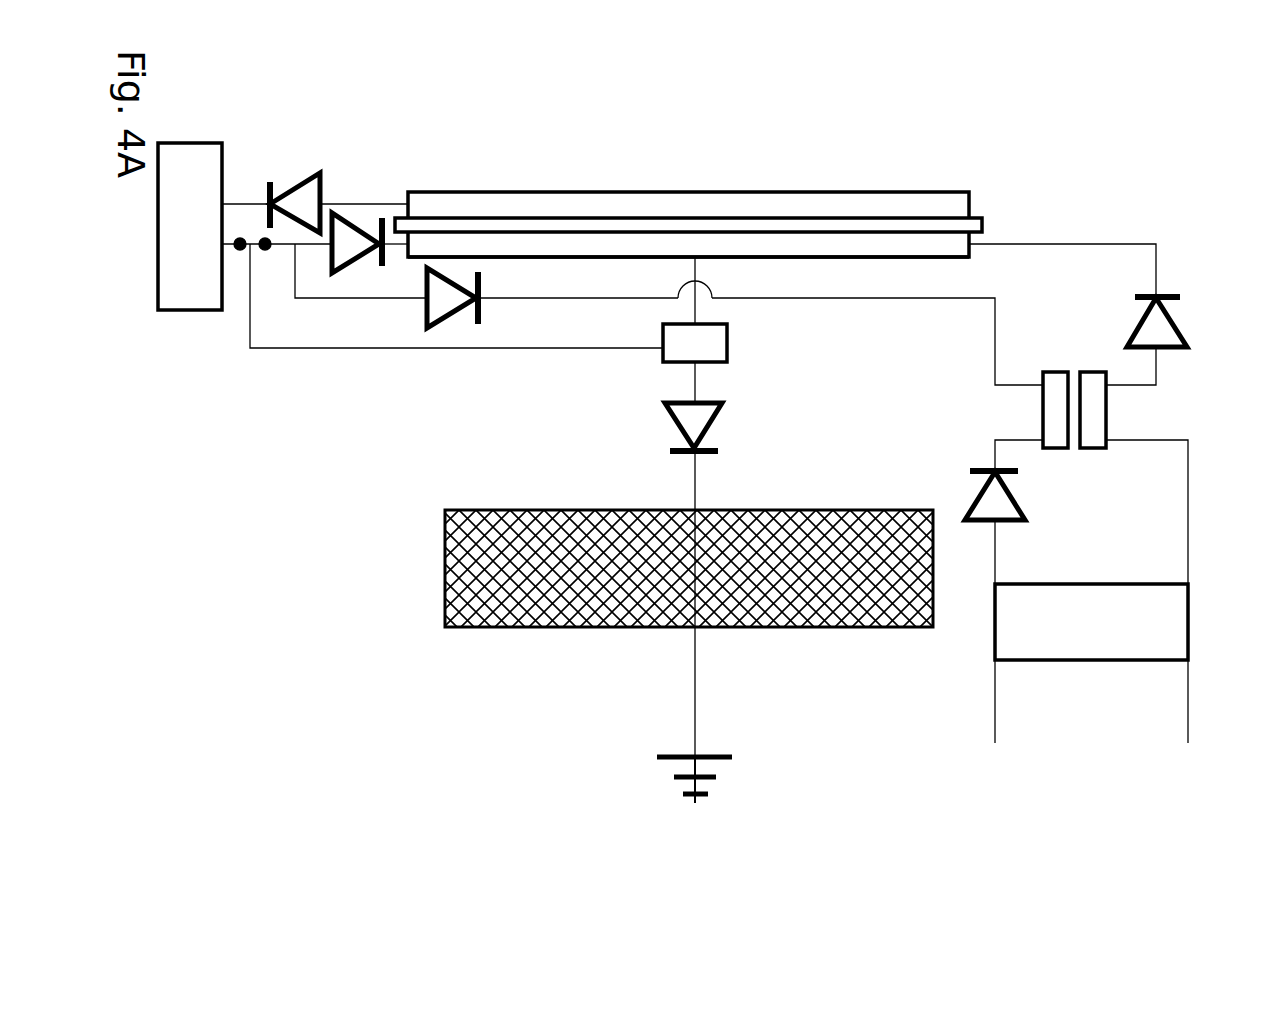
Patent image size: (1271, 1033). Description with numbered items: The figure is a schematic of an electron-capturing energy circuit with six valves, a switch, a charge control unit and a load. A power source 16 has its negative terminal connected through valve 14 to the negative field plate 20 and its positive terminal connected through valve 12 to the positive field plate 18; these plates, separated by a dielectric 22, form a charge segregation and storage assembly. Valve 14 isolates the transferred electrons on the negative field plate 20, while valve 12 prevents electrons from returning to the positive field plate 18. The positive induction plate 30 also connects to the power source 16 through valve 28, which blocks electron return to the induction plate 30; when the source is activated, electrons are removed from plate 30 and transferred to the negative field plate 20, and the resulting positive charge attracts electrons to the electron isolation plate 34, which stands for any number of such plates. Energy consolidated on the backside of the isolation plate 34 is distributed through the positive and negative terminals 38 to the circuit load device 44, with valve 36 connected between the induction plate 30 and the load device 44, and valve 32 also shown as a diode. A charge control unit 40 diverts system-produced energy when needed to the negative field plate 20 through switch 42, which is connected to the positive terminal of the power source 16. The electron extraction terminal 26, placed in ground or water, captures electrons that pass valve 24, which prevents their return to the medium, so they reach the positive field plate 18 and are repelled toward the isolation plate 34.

The valve 12 is at (362, 262).
The valve 14 is at (297, 175).
The power source 16 is at (189, 323).
The positive field plate 18 is at (982, 252).
The negative field plate 20 is at (980, 194).
The dielectric 22 is at (995, 221).
The valve assembly 24 is at (668, 425).
The electron extraction terminal 26 is at (432, 567).
The valve assembly 28 is at (483, 312).
The positive induction plate 30 is at (1030, 412).
The valve assembly 32 is at (1180, 320).
The electron isolation plate 34 is at (1094, 363).
The valve assembly 36 is at (1018, 505).
The positive and negative terminals 38 is at (1176, 723).
The charge control unit 40 is at (735, 342).
The switch 42 is at (266, 255).
The circuit load device 44 is at (983, 643).